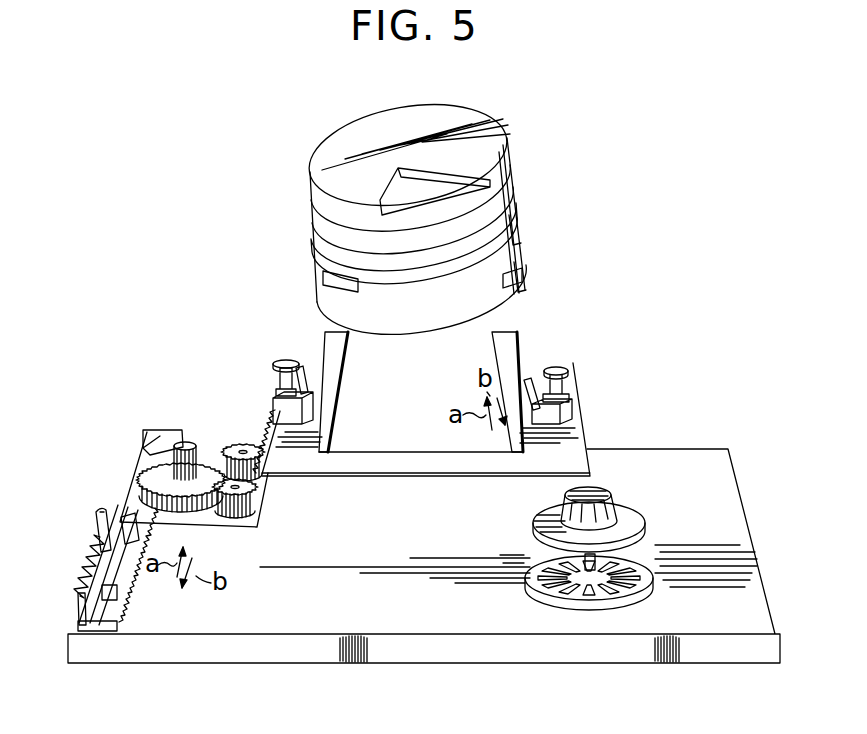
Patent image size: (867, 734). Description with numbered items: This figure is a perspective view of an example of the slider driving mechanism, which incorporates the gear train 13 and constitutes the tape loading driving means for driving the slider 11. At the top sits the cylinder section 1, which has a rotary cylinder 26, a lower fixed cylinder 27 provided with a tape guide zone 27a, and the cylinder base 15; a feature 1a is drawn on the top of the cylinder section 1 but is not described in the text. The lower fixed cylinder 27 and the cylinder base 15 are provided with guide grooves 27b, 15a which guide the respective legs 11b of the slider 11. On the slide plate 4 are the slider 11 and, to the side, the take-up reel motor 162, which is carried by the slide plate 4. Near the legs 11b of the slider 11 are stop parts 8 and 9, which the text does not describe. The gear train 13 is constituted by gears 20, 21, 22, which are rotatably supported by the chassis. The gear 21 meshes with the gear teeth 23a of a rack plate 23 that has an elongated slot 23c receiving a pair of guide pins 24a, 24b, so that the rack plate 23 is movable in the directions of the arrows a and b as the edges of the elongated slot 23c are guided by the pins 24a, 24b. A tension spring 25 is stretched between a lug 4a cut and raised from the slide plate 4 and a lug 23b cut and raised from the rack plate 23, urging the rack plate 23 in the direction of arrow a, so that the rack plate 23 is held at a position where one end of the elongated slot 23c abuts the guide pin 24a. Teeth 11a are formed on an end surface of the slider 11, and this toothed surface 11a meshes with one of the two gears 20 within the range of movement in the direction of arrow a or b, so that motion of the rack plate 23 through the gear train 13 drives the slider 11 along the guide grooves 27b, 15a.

The cylinder section 1 is at (453, 115).
The notch 1a is at (405, 200).
The slide plate 4 is at (722, 470).
The lug 4a is at (97, 510).
The stopper bolt 8 is at (278, 382).
The stopper pin 9 is at (303, 365).
The slider 11 is at (335, 427).
The teeth 11a is at (270, 420).
The legs 11b is at (343, 372).
The gear train 13 is at (208, 362).
The cylinder base 15 is at (523, 292).
The guide groove 15a is at (523, 263).
The take-up reel motor 162 is at (628, 510).
The gears 20 is at (233, 443).
The gear 21 is at (168, 438).
The gear 22 is at (147, 428).
The rack plate 23 is at (92, 630).
The gear teeth 23a is at (152, 553).
The lug 23b is at (82, 618).
The elongated slot 23c is at (110, 631).
The guide pin 24a is at (108, 587).
The guide pin 24b is at (104, 520).
The tension spring 25 is at (90, 540).
The rotary cylinder 26 is at (320, 218).
The lower fixed cylinder 27 is at (318, 241).
The tape guide zone 27a is at (518, 248).
The guide groove 27b is at (323, 272).